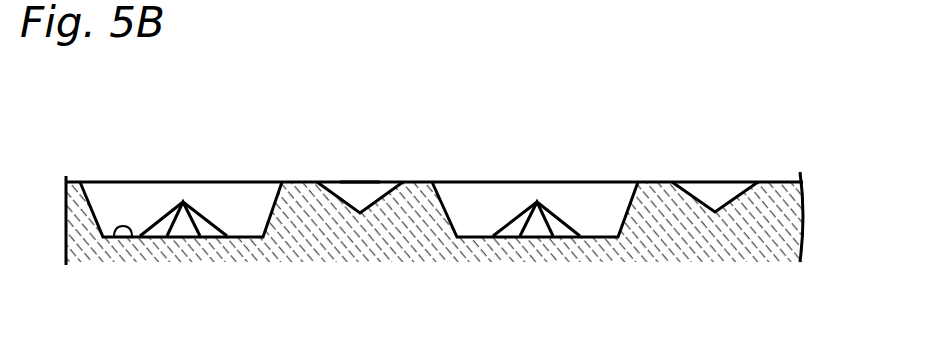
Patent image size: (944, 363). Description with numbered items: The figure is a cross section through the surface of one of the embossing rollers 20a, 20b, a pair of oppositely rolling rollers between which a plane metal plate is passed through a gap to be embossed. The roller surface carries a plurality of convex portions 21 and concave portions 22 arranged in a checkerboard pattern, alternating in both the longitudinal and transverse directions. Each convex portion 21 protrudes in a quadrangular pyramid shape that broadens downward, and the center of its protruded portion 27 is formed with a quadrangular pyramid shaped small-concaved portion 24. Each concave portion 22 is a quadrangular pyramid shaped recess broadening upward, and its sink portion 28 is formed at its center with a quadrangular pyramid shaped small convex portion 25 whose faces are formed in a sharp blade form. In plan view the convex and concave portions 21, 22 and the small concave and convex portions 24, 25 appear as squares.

The upper embossing roller 20a is at (780, 143).
The lower embossing roller 20b is at (457, 156).
The convex portion 21 is at (375, 163).
The concave portion 22 is at (140, 171).
The small-concaved portion 24 is at (350, 183).
The small convex portion 25 is at (212, 213).
The protruded portion 27 is at (420, 177).
The sink portion 28 is at (113, 232).